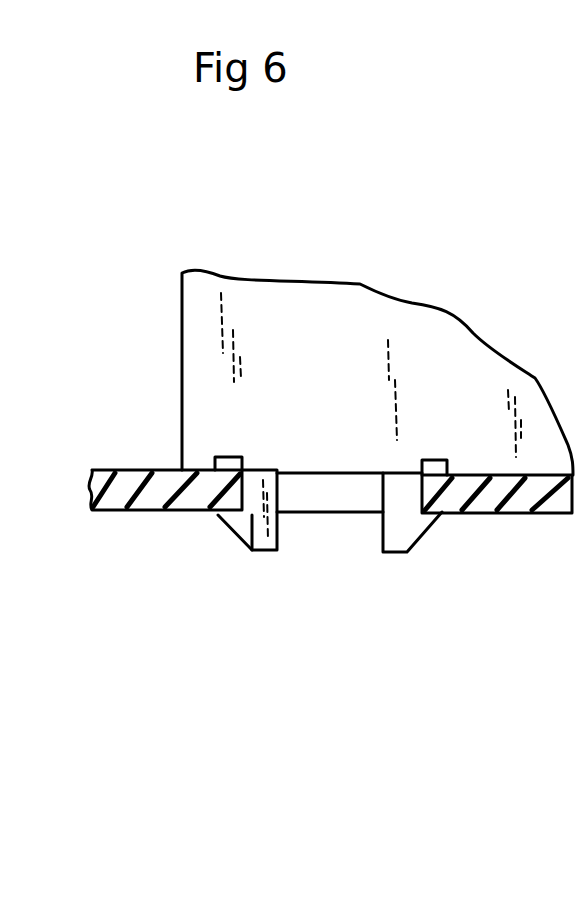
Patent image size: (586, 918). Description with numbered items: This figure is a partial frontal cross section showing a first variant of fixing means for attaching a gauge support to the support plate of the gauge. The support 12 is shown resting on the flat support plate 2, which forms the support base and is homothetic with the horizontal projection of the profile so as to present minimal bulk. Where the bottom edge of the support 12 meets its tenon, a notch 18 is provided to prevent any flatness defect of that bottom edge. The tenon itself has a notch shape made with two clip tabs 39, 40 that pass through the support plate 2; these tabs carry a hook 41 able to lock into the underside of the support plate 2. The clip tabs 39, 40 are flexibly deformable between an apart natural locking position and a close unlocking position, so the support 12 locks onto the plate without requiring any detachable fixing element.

The support 12 is at (400, 323).
The notch 18 is at (232, 460).
The clip tab 39 is at (252, 553).
The clip tab 40 is at (399, 493).
The hook 41 is at (240, 518).
The support plate 2 is at (514, 515).